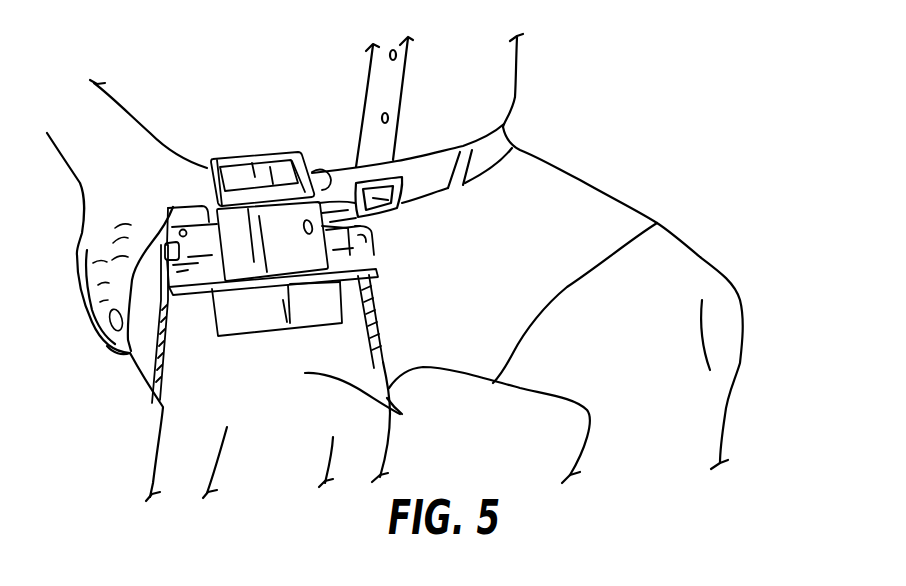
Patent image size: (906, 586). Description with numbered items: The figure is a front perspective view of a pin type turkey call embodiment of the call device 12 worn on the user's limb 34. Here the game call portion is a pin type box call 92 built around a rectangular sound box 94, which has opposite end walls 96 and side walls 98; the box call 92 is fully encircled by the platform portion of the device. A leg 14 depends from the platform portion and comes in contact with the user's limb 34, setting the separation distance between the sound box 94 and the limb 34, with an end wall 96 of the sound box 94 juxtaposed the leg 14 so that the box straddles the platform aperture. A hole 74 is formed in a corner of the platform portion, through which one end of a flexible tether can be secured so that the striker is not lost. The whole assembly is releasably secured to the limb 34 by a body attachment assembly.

The support bracket 12 is at (383, 253).
The leg 14 is at (272, 318).
The user's limb 34 is at (400, 414).
The hole 74 is at (180, 229).
The pin type box call 92 is at (279, 137).
The rectangular sound box 94 is at (197, 176).
The end wall 96 is at (242, 160).
The side wall 98 is at (325, 177).